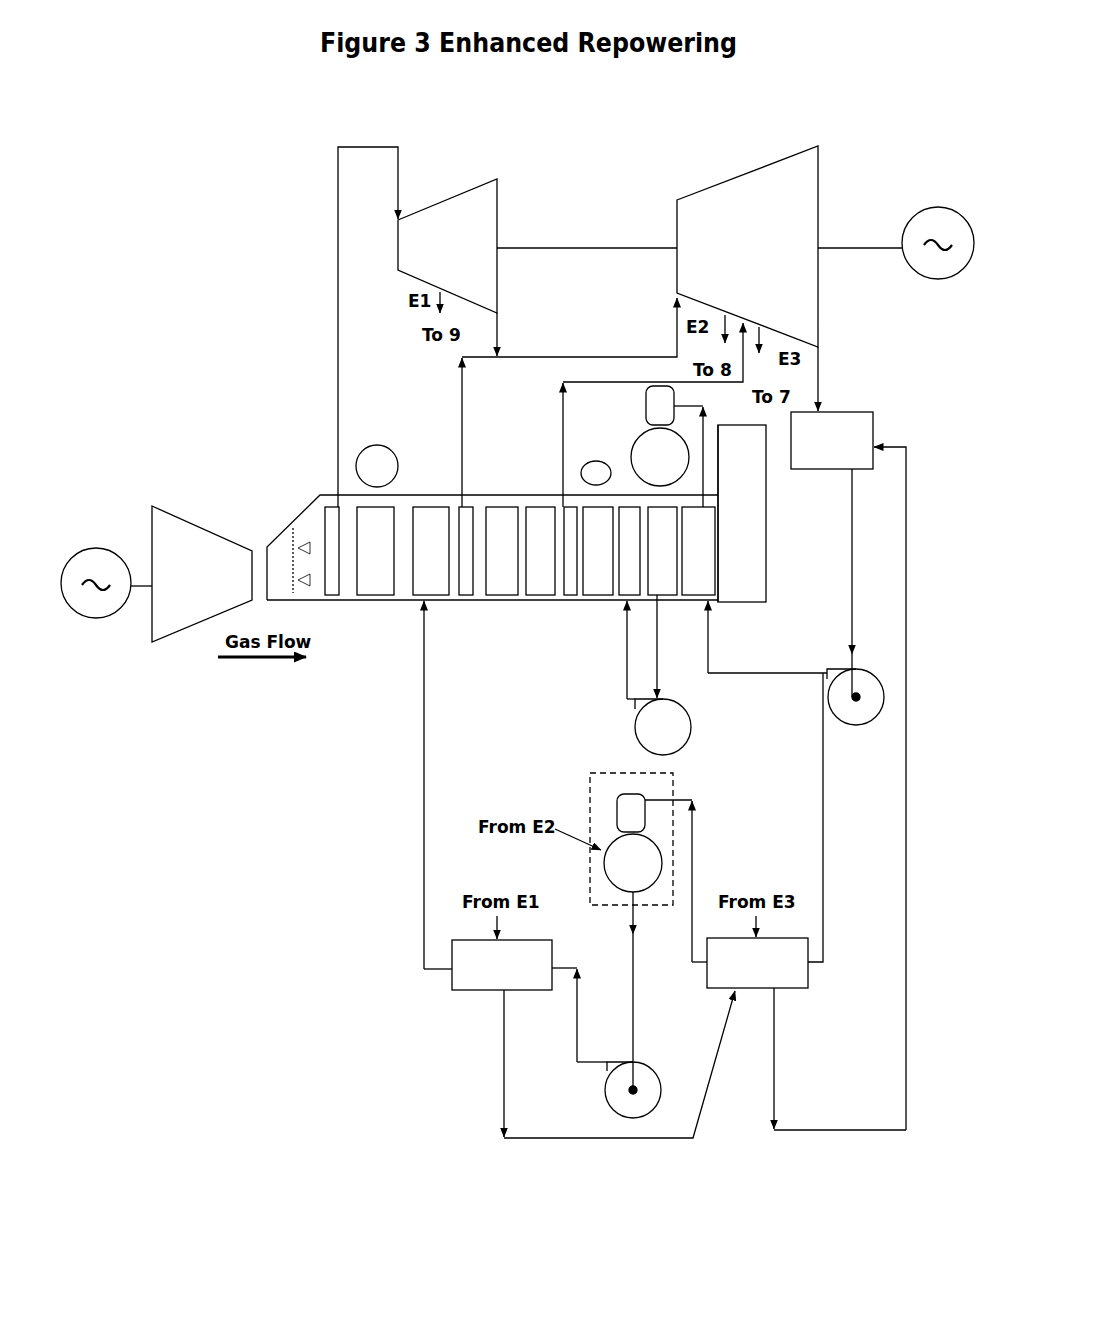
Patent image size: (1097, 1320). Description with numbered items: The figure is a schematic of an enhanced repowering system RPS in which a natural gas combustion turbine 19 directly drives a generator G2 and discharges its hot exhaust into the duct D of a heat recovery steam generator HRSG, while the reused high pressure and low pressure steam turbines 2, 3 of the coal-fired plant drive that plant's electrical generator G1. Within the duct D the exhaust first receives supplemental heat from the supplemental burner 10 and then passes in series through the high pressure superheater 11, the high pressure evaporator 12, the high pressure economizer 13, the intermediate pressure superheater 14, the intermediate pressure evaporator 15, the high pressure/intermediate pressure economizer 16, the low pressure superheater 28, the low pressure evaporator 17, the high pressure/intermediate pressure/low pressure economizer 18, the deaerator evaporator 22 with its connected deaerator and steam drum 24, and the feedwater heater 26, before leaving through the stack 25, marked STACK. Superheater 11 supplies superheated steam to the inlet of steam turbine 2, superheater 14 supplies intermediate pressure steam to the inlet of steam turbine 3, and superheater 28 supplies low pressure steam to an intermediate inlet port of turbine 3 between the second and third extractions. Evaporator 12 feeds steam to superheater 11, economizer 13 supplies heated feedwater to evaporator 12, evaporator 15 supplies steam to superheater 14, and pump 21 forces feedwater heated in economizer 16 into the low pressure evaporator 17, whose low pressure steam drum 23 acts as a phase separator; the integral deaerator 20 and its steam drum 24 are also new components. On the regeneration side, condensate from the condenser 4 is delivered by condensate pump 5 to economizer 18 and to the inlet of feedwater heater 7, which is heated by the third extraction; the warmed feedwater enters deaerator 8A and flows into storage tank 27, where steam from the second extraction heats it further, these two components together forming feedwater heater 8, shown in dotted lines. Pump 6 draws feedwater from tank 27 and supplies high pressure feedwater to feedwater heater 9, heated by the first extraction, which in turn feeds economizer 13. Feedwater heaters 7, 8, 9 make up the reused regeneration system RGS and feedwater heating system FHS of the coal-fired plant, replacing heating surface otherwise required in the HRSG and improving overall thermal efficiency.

The high pressure steam turbine 2 is at (447, 246).
The low pressure steam turbine 3 is at (747, 246).
The condenser 4 is at (832, 440).
The condensate pump 5 is at (855, 697).
The pump 6 is at (633, 1090).
The feedwater heater 7 is at (757, 963).
The feedwater heater 8 is at (586, 804).
The deaerator 8A is at (631, 813).
The feedwater heater 9 is at (502, 965).
The supplemental burner 10 is at (289, 523).
The high pressure superheater 11 is at (338, 604).
The high pressure evaporator 12 is at (375, 551).
The high pressure economizer 13 is at (431, 551).
The intermediate pressure superheater 14 is at (466, 604).
The intermediate pressure evaporator 15 is at (502, 551).
The high pressure/intermediate pressure economizer 16 is at (540, 551).
The low pressure evaporator 17 is at (598, 551).
The high pressure/intermediate pressure/low pressure economizer 18 is at (627, 504).
The combustion turbine 19 is at (202, 574).
The integral deaerator 20 is at (660, 405).
The pump 21 is at (663, 727).
The deaerator evaporator 22 is at (662, 551).
The low pressure steam drum 23 is at (588, 459).
The steam drum 24 is at (660, 457).
The stack 25 is at (742, 513).
The feedwater heater 26 is at (698, 551).
The storage tank 27 is at (633, 863).
The low pressure superheater 28 is at (571, 604).
The electrical generator G1 is at (956, 281).
The generator G2 is at (68, 609).
The repowering system RPS is at (389, 424).
The heat recovery steam generator HRSG is at (398, 691).
The stack STACK is at (774, 541).
The regeneration system RGS is at (718, 851).
The feedwater heating system FHS is at (455, 1037).
The duct D is at (526, 604).